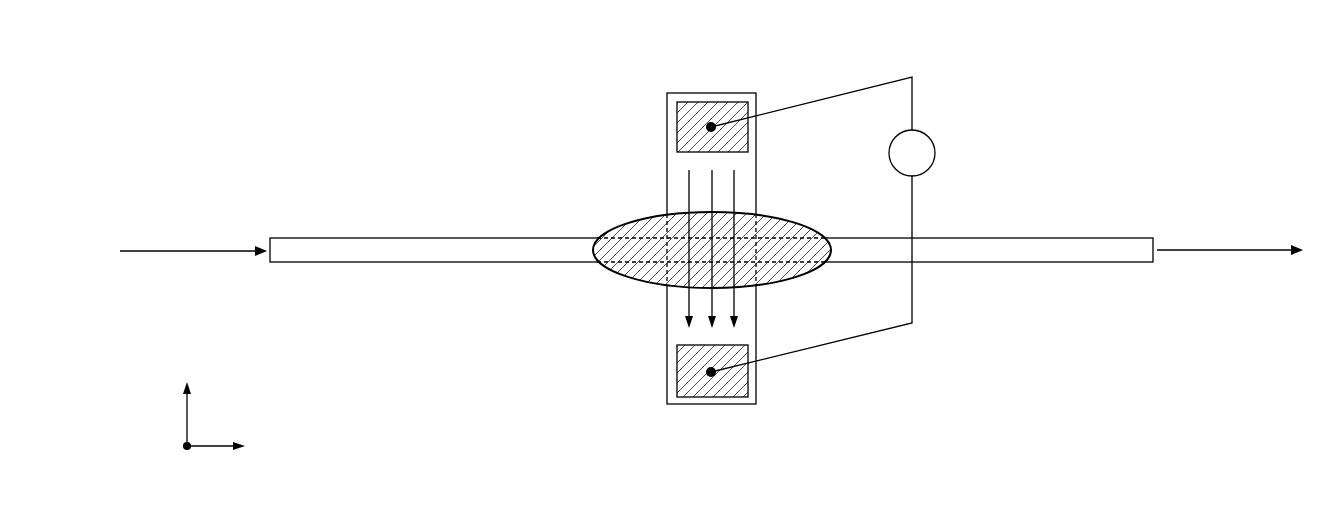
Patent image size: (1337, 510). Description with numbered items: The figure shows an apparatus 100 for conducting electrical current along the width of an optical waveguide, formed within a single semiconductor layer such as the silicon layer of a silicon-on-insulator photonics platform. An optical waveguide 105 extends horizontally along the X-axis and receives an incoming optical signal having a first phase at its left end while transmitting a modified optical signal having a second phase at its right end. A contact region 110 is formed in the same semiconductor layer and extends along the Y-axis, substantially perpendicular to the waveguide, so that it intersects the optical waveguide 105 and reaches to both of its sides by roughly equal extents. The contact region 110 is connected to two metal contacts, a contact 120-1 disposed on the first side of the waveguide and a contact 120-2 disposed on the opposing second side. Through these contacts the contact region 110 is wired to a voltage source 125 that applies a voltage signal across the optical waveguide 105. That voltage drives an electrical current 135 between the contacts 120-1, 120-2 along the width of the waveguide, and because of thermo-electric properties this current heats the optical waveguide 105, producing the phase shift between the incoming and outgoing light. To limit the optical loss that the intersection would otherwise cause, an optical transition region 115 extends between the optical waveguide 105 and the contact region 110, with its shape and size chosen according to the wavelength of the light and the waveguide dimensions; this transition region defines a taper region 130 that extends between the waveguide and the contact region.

The apparatus 100 is at (1150, 67).
The optical waveguide 105 is at (452, 238).
The contact region 110 is at (712, 93).
The optical transition region 115 is at (638, 204).
The contact 120-1 is at (677, 127).
The contact 120-2 is at (677, 372).
The voltage source 125 is at (935, 153).
The taper region 130 is at (656, 286).
The electrical current 135 is at (793, 218).